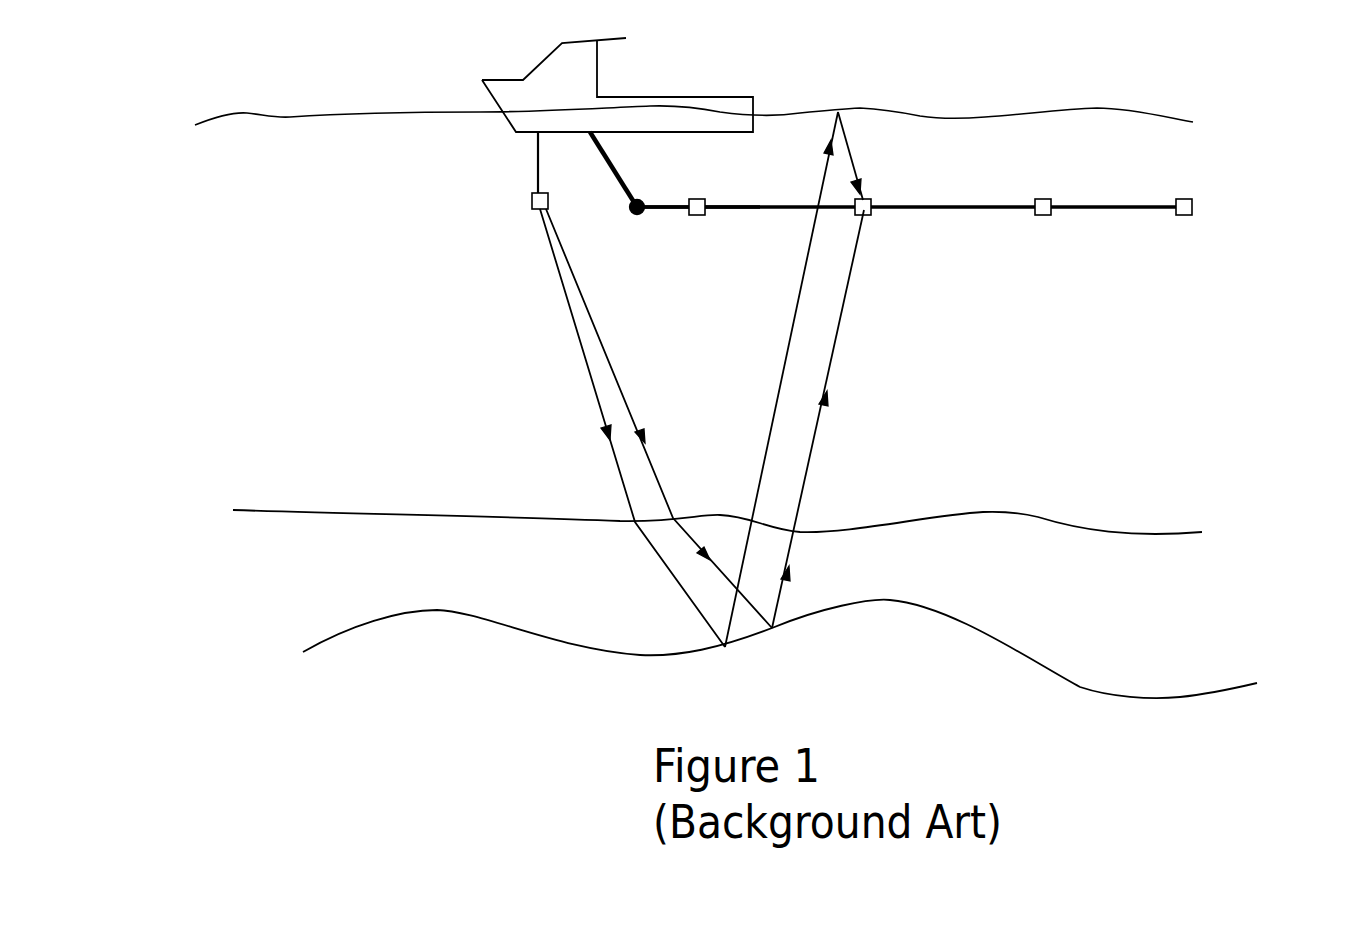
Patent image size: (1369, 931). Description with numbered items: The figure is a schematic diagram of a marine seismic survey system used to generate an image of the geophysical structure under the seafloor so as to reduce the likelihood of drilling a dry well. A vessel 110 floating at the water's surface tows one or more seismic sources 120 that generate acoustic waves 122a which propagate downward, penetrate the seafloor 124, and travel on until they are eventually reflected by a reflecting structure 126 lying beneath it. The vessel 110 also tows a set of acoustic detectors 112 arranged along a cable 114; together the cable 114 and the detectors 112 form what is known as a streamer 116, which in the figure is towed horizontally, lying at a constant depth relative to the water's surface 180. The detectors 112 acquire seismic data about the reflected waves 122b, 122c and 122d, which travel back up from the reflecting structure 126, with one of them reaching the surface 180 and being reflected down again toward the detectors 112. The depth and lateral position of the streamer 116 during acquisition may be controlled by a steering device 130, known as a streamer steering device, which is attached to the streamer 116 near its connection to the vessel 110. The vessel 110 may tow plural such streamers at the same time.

The vessel 110 is at (542, 75).
The acoustic detectors 112 is at (697, 216).
The cable 114 is at (673, 212).
The streamer 116 is at (717, 300).
The seismic source 120 is at (532, 201).
The acoustic waves 122a is at (605, 362).
The reflected wave 122b is at (817, 455).
The reflected wave 122c is at (783, 390).
The reflected wave 122d is at (852, 153).
The seafloor 124 is at (1038, 517).
The reflecting structure 126 is at (1080, 687).
The steering device 130 is at (640, 198).
The water surface 180 is at (887, 110).